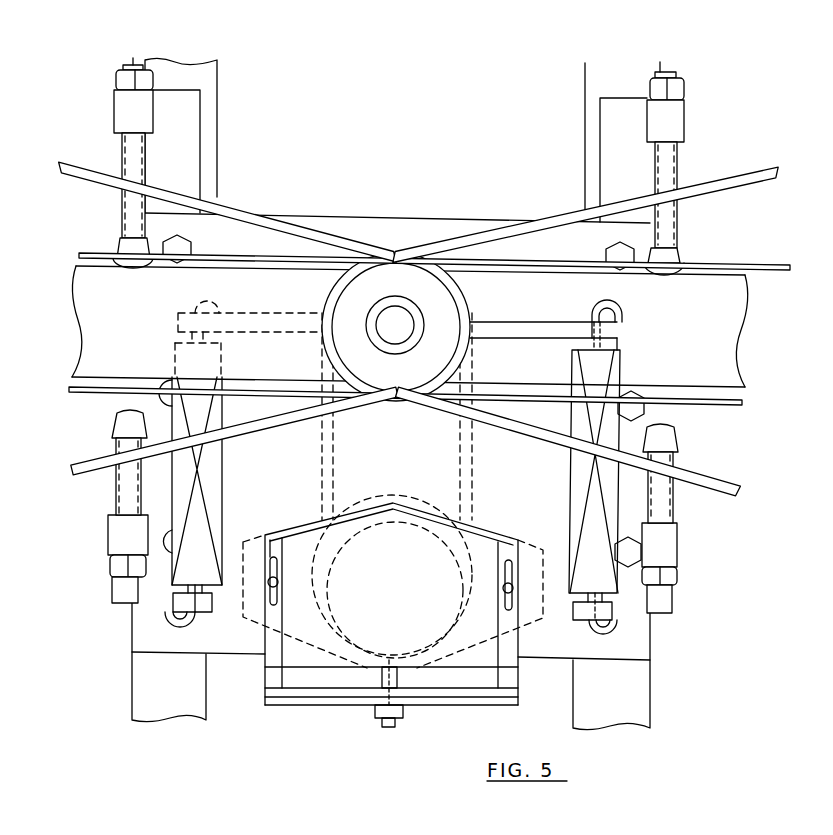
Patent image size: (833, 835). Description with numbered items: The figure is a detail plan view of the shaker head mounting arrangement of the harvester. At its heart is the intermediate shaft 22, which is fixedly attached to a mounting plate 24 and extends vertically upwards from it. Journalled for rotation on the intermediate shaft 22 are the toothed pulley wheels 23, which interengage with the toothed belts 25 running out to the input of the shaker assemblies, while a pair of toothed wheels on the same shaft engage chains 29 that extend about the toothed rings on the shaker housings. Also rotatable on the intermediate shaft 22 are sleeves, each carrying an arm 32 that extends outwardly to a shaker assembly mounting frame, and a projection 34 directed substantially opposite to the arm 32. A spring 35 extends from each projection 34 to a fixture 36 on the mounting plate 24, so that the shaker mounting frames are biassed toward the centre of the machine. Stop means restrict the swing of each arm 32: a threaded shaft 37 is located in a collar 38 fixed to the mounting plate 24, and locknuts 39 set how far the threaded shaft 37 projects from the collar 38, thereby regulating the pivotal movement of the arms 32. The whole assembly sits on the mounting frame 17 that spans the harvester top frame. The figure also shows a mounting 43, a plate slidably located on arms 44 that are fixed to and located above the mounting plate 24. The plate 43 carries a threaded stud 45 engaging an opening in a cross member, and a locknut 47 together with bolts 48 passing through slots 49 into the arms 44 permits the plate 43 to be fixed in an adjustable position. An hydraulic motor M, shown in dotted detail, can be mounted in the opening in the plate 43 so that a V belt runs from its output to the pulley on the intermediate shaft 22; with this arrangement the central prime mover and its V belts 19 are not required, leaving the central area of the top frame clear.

The mounting frame 17 is at (217, 125).
The V belts 19 is at (474, 453).
The intermediate shaft 22 is at (391, 321).
The pulley wheels 23 is at (391, 272).
The mounting plate 24 is at (630, 650).
The toothed belts 25 is at (107, 254).
The chains 29 is at (81, 168).
The arm 32 is at (86, 330).
The projection 34 is at (266, 314).
The spring 35 is at (214, 470).
The fixture 36 is at (578, 618).
The threaded shaft 37 is at (134, 148).
The collar 38 is at (124, 112).
The locknuts 39 is at (124, 79).
The mounting 43 is at (311, 670).
The arms 44 is at (271, 677).
The threaded stud 45 is at (388, 728).
The locknut 47 is at (378, 711).
The bolts 48 is at (277, 590).
The slots 49 is at (272, 556).
The hydraulic motor M is at (447, 650).